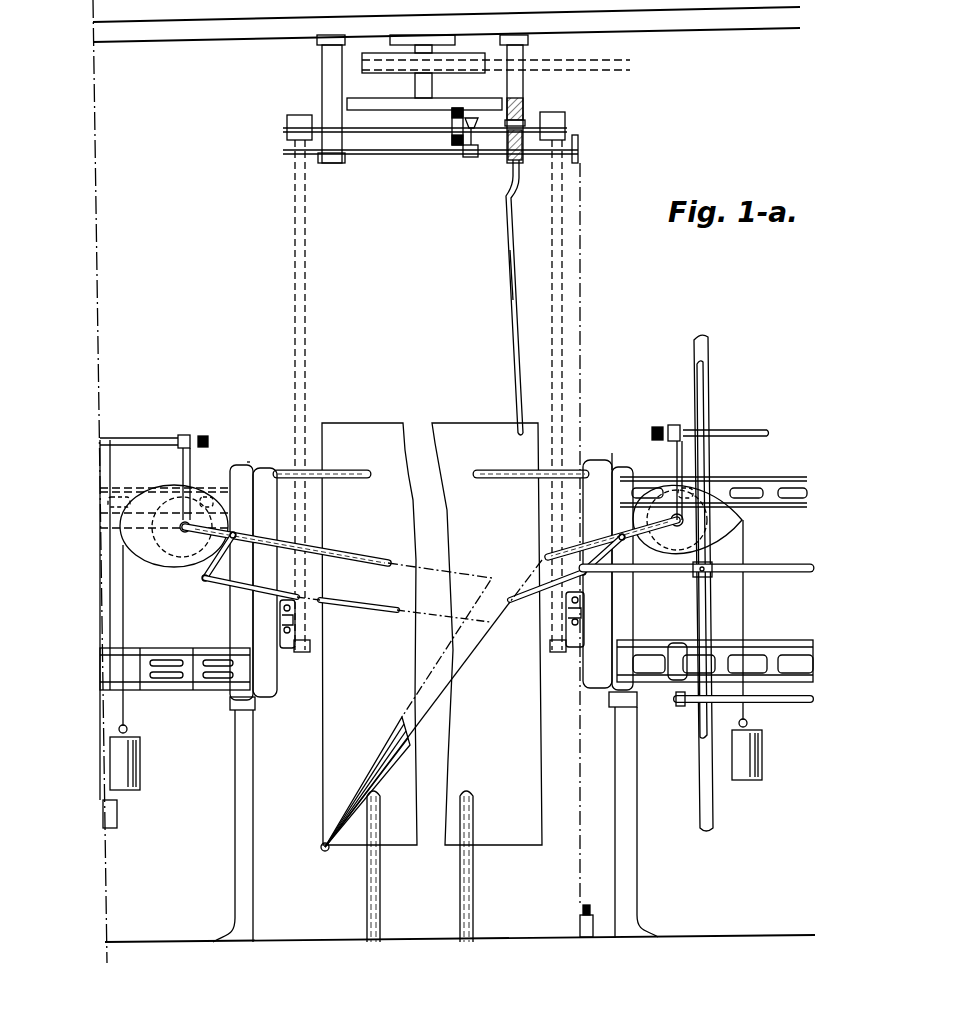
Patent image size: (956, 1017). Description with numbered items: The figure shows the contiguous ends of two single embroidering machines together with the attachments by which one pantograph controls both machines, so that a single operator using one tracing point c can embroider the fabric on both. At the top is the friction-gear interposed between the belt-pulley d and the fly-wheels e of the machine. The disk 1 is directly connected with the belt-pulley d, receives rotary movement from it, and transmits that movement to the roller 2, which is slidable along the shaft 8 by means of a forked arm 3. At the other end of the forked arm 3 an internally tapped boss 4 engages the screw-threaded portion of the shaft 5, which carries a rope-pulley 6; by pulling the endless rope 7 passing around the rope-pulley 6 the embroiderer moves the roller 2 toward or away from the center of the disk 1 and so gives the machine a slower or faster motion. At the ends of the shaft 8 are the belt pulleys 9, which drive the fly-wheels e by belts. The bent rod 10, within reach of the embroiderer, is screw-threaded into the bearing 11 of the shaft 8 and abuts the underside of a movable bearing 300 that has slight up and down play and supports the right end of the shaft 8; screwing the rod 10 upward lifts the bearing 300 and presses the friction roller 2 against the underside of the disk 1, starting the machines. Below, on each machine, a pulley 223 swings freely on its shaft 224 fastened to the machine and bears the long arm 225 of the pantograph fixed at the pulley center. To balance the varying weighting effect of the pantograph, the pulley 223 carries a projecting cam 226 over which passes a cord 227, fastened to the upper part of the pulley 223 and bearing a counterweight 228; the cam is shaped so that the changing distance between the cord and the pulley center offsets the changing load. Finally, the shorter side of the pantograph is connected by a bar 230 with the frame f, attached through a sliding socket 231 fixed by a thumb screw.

The disk 1 is at (378, 108).
The belt-pulley d is at (496, 75).
The movable bearing 300 is at (524, 118).
The belt pulleys 9 is at (297, 138).
The shaft 8 is at (369, 132).
The shaft 5 is at (372, 154).
The roller 2 is at (456, 147).
The forked arm 3 is at (476, 124).
The internally tapped boss 4 is at (470, 157).
The bearing 11 is at (517, 164).
The bent rod 10 is at (510, 249).
The rope-pulley 6 is at (582, 143).
The endless rope 7 is at (580, 182).
The pulley 223 is at (168, 500).
The shaft 224 is at (426, 536).
The long arm of the pantograph 225 is at (364, 549).
The projecting cam 226 is at (141, 540).
The cord 227 is at (122, 632).
The counterweight 228 is at (134, 763).
The fly-wheels e is at (308, 648).
The frame f is at (702, 729).
The bar 230 is at (673, 573).
The sliding socket 231 is at (713, 577).
The tracing point c is at (414, 737).